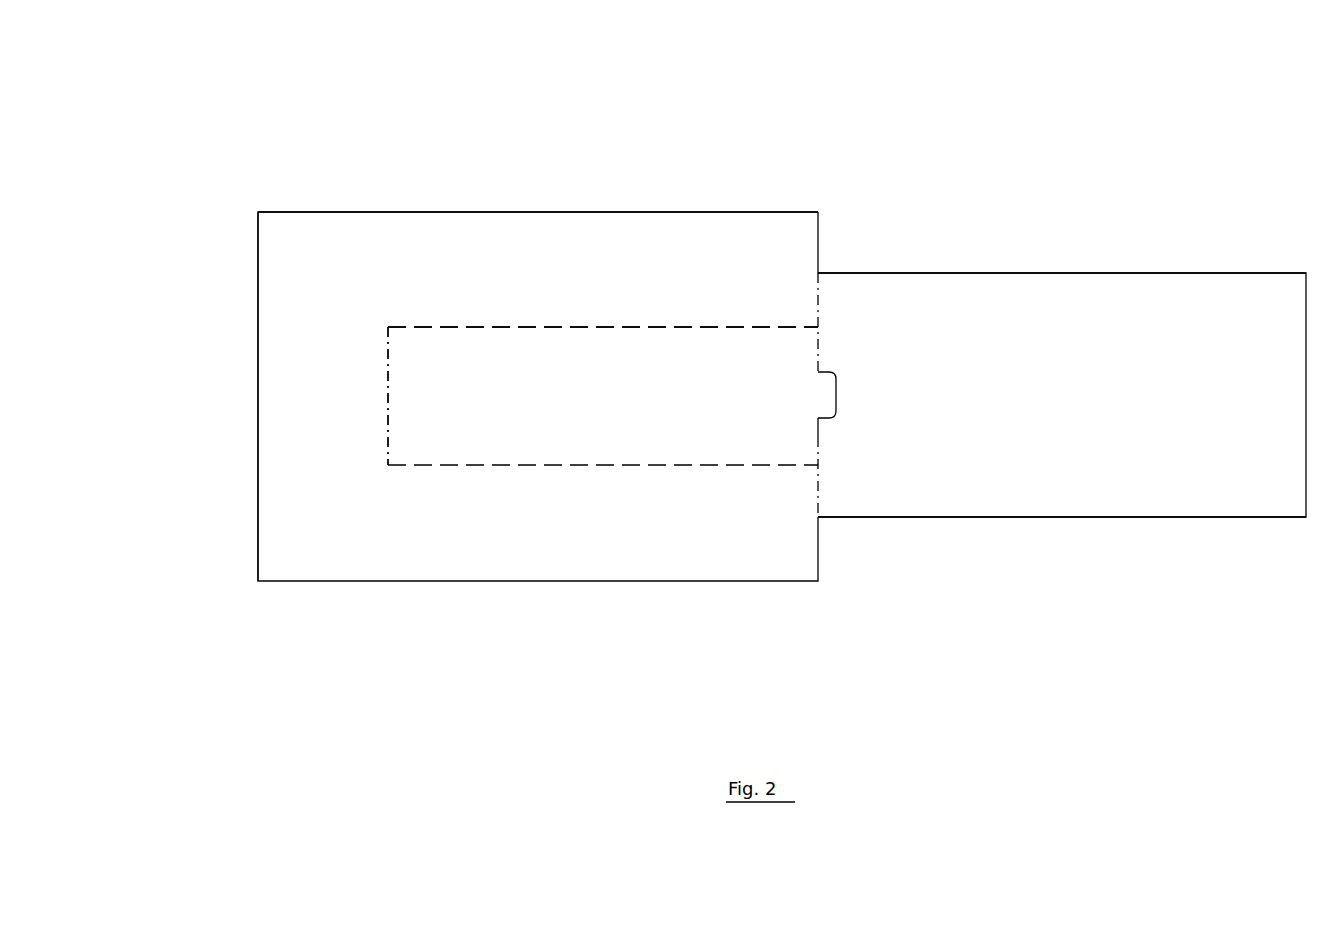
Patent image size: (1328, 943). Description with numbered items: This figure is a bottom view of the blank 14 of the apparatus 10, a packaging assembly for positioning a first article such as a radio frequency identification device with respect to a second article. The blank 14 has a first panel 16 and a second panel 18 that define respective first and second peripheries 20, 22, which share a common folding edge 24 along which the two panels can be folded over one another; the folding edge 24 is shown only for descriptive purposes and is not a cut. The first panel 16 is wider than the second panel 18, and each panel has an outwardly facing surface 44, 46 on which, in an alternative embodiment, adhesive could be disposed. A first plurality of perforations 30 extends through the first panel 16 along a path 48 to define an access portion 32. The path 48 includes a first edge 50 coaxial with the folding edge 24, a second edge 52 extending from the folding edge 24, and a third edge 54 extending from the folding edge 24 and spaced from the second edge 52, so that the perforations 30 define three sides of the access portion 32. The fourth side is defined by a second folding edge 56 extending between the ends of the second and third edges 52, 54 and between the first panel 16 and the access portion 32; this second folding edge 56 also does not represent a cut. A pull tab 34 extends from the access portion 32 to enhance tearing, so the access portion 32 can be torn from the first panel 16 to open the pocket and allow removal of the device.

The apparatus 10 is at (1013, 152).
The blank 14 is at (368, 636).
The first panel 16 is at (298, 565).
The second panel 18 is at (1142, 297).
The first periphery 20 is at (488, 212).
The second periphery 22 is at (1042, 273).
The folding edge 24 is at (818, 297).
The first plurality of perforations 30 is at (599, 466).
The access portion 32 is at (462, 357).
The pull tab 34 is at (836, 383).
The outwardly facing surface 44 is at (283, 428).
The outwardly facing surface 46 is at (1090, 476).
The path 48 is at (633, 321).
The first edge 50 is at (818, 432).
The second edge 52 is at (702, 467).
The third edge 54 is at (730, 327).
The second folding edge 56 is at (387, 360).